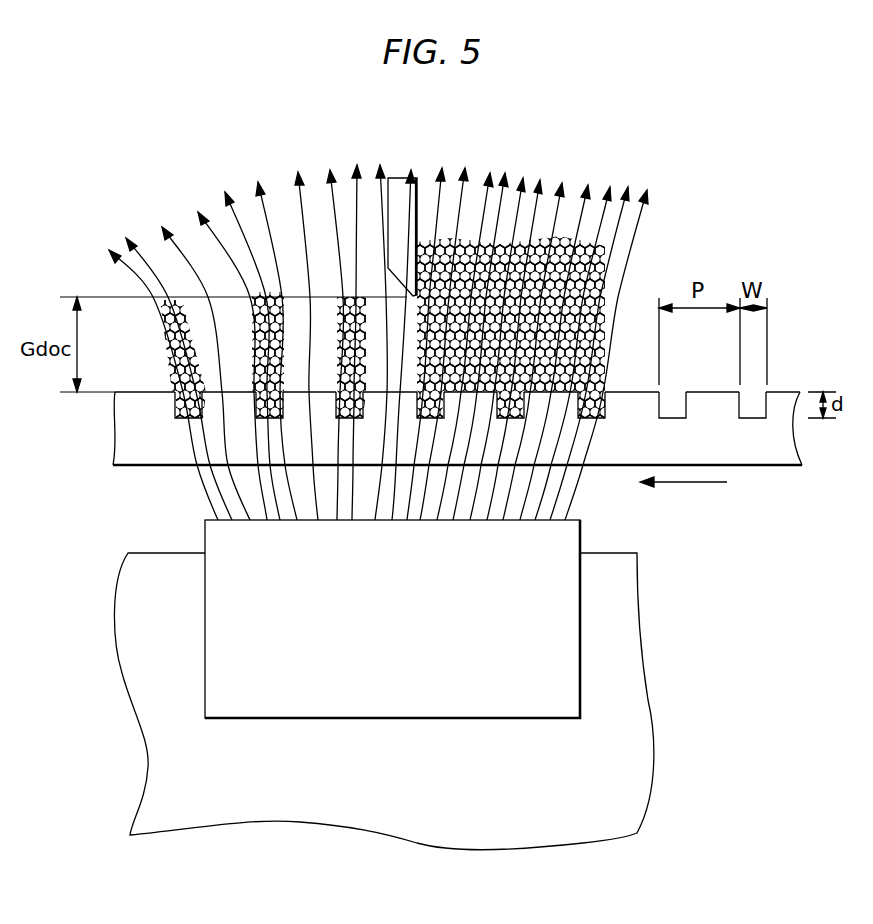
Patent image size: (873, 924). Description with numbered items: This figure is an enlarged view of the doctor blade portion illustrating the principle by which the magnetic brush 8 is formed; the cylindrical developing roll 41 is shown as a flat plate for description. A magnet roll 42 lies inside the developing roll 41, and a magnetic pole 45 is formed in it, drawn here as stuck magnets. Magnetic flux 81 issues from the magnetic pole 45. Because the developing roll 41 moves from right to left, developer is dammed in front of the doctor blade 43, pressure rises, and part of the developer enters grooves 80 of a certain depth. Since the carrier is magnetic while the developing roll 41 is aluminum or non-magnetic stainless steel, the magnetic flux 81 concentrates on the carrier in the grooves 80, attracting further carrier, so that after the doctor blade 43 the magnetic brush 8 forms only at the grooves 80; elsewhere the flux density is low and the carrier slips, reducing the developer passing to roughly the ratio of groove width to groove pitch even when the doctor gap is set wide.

The magnetic brush 8 is at (164, 367).
The developing roll 41 is at (120, 447).
The magnet roll 42 is at (652, 761).
The doctor blade 43 is at (396, 178).
The magnetic pole 45 is at (563, 634).
The grooves 80 is at (670, 397).
The magnetic flux 81 is at (640, 232).